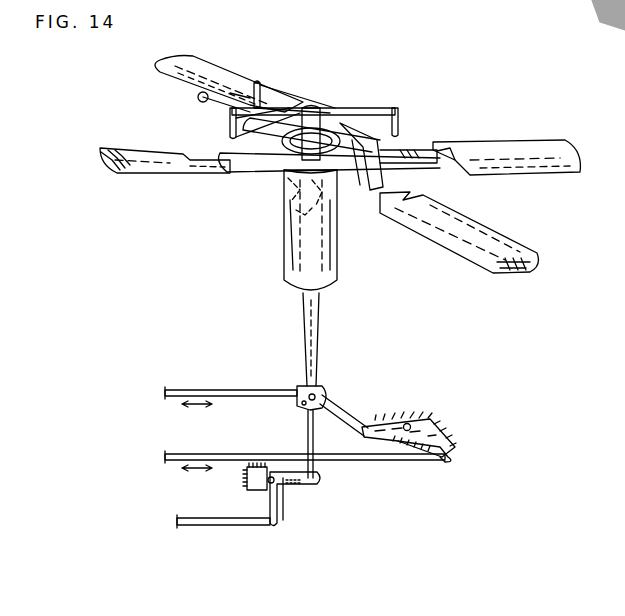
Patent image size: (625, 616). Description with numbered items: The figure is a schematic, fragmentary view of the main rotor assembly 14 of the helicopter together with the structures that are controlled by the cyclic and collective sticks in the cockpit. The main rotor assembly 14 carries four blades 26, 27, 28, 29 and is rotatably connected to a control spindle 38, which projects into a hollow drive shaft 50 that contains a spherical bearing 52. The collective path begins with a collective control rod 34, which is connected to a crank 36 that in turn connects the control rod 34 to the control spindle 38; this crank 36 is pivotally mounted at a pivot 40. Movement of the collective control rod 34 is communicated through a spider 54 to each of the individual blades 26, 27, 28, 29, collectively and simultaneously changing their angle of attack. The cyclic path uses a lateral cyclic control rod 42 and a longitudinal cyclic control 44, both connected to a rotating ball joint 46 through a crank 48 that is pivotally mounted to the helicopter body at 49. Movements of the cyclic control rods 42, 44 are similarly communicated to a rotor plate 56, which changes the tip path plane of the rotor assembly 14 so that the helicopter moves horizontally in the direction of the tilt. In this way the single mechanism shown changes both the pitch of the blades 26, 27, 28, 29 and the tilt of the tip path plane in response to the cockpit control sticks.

The main rotor assembly 14 is at (497, 138).
The blade 26 is at (545, 143).
The blade 27 is at (172, 76).
The blade 28 is at (152, 178).
The blade 29 is at (500, 238).
The collective control rod 34 is at (190, 517).
The crank 36 is at (283, 503).
The control spindle 38 is at (303, 300).
The pivot 40 is at (245, 485).
The lateral cyclic control rod 42 is at (190, 455).
The longitudinal cyclic control 44 is at (190, 389).
The rotating ball joint 46 is at (330, 386).
The crank 48 is at (420, 430).
The pivot mounting 49 is at (407, 423).
The hollow drive shaft 50 is at (338, 268).
The spherical bearing 52 is at (295, 222).
The spider 54 is at (338, 108).
The rotor plate 56 is at (275, 182).